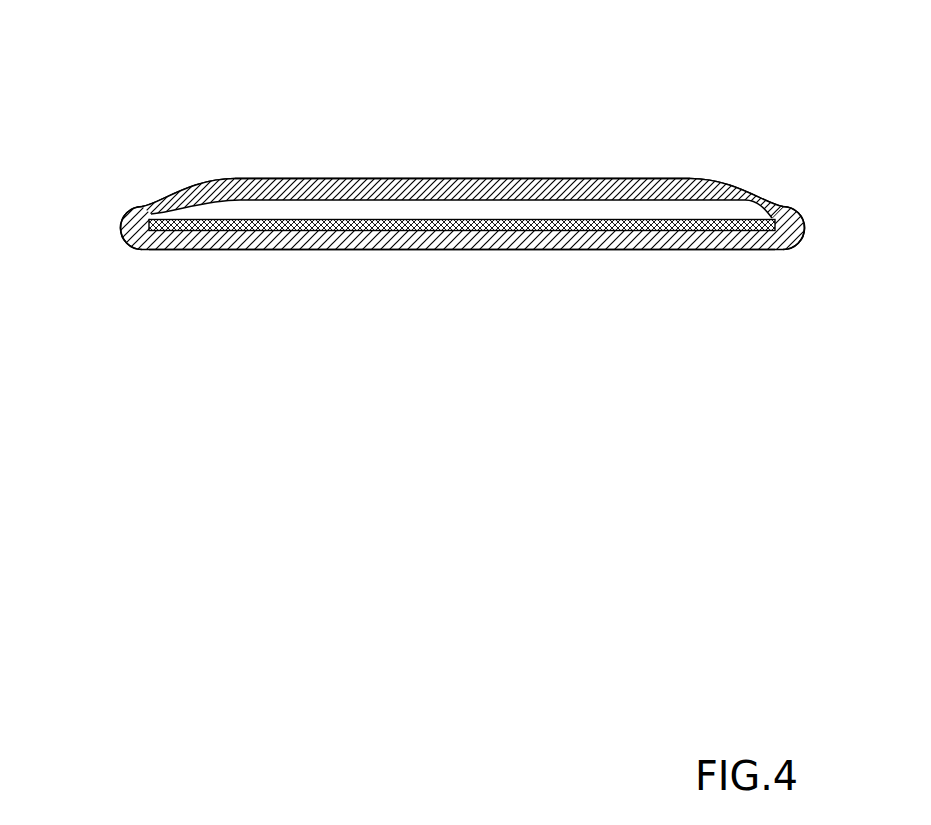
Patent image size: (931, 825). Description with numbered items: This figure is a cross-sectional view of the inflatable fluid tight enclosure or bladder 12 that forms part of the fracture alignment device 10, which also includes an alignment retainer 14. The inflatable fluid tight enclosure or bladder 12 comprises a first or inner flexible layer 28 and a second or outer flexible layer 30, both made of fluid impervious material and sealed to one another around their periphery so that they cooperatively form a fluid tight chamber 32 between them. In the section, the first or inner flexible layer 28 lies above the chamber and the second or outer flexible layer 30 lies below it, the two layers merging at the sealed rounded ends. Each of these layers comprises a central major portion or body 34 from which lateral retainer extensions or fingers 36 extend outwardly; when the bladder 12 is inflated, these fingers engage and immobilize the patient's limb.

The fracture alignment device 10 is at (374, 338).
The inflatable fluid tight enclosure or bladder 12 is at (539, 129).
The alignment retainer 14 is at (539, 294).
The first or inner flexible layer 28 is at (231, 178).
The second or outer flexible layer 30 is at (758, 250).
The fluid tight chamber 32 is at (370, 186).
The central major portion or body 34 is at (435, 184).
The lateral retainer extensions or fingers 36 is at (140, 205).